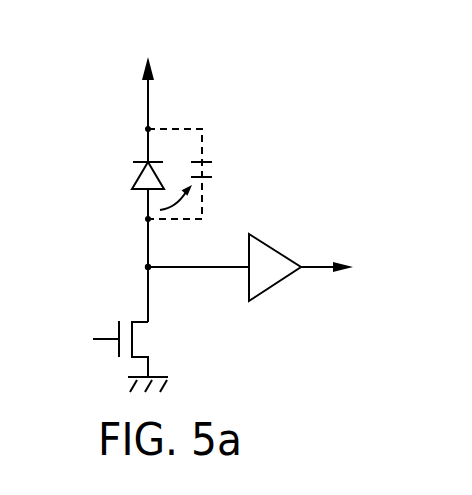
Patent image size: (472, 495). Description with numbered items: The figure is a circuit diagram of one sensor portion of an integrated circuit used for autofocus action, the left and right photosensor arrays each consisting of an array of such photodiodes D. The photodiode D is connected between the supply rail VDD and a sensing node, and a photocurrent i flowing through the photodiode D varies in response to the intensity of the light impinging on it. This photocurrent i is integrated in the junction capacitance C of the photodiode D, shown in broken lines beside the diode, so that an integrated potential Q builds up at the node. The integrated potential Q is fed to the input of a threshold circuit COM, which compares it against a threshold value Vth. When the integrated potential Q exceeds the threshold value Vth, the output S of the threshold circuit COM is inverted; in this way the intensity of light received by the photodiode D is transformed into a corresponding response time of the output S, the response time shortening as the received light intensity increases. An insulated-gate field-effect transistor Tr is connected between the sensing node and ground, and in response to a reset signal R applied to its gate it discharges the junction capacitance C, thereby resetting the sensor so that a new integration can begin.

The supply voltage VDD is at (157, 83).
The photodiode D is at (83, 122).
The junction capacitance C is at (197, 174).
The photocurrent i is at (176, 190).
The integrated potential Q is at (181, 269).
The threshold circuit COM is at (278, 286).
The threshold value Vth is at (270, 266).
The output S is at (339, 269).
The insulated-gate field-effect transistor Tr is at (143, 339).
The reset signal R is at (96, 340).